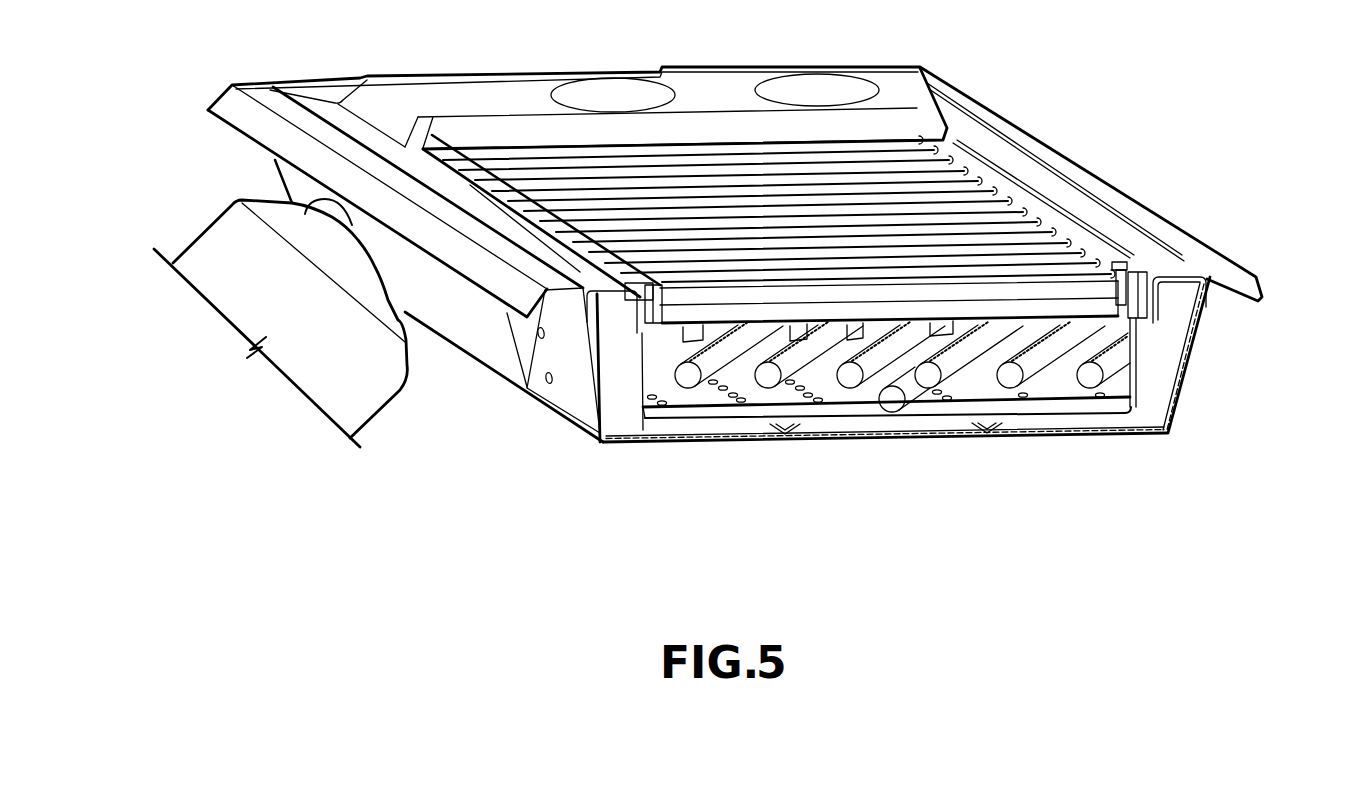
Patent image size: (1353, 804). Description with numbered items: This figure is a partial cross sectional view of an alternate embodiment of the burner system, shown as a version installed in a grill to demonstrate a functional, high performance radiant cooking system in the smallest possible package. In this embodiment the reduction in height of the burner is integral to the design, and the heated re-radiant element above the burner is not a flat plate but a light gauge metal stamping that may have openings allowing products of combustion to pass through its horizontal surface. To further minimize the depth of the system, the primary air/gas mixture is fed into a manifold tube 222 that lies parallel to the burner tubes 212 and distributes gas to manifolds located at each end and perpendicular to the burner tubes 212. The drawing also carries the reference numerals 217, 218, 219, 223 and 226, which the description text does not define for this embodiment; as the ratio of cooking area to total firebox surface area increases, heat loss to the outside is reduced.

The burner tubes 212 is at (1120, 262).
The base plate 217 is at (1088, 403).
The bottom wall 218 is at (1037, 425).
The perforated plate 219 is at (813, 398).
The manifold tube 222 is at (896, 412).
The front rail 223 is at (908, 345).
The side wall 226 is at (1145, 365).